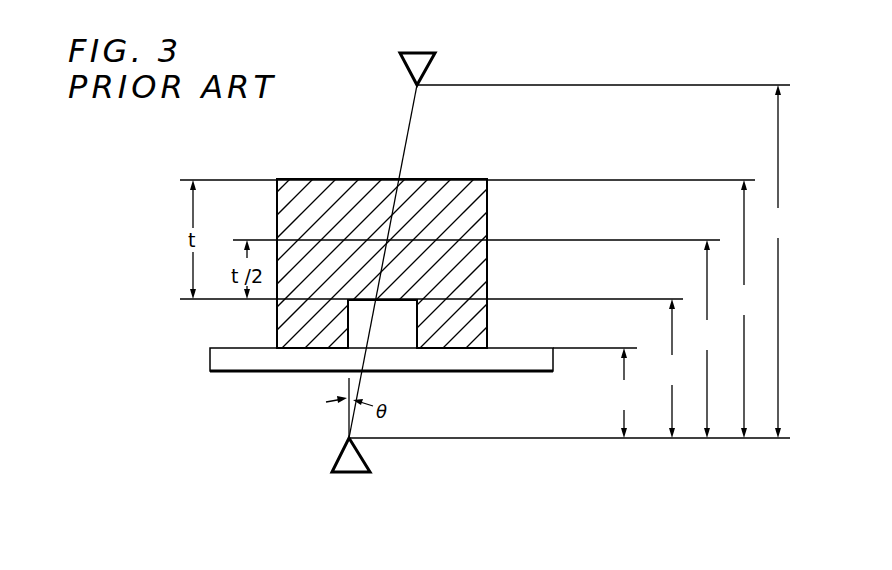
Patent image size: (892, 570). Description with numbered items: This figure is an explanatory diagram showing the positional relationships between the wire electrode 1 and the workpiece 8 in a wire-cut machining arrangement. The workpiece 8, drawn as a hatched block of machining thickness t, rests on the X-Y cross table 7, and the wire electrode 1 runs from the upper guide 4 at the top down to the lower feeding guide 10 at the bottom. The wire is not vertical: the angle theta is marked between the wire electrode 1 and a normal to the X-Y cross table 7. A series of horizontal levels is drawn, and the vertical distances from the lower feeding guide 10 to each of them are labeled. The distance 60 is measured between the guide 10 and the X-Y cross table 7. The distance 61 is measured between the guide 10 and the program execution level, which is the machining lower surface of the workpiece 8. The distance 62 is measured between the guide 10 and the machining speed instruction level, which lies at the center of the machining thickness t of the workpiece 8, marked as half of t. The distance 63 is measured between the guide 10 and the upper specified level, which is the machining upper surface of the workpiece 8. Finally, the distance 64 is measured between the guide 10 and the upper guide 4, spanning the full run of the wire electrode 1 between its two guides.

The wire electrode 1 is at (408, 118).
The upper guide 4 is at (405, 68).
The X-Y cross table 7 is at (242, 378).
The workpiece 8 is at (330, 178).
The lower feeding guide 10 is at (343, 478).
The distance between the guide and the X-Y cross table 60 is at (624, 393).
The distance between the guide and the program execution level 61 is at (672, 368).
The distance between the guide and the machining speed instruction level 62 is at (707, 339).
The distance between the guide and the upper specified level 63 is at (744, 309).
The distance between the guide and the upper guide 64 is at (778, 261).